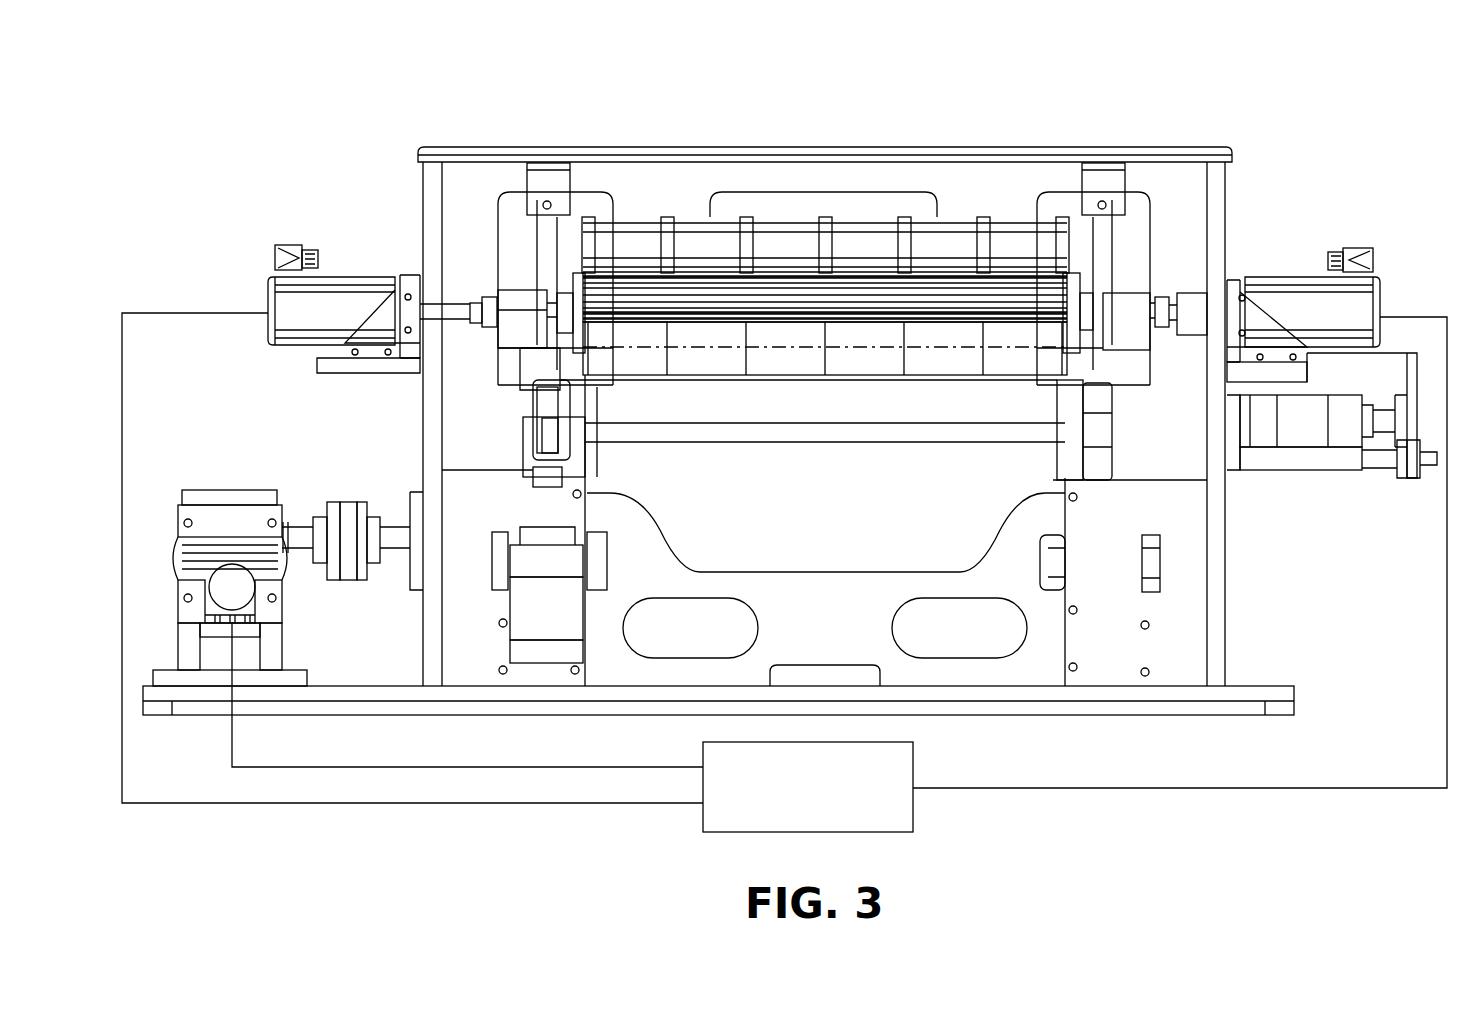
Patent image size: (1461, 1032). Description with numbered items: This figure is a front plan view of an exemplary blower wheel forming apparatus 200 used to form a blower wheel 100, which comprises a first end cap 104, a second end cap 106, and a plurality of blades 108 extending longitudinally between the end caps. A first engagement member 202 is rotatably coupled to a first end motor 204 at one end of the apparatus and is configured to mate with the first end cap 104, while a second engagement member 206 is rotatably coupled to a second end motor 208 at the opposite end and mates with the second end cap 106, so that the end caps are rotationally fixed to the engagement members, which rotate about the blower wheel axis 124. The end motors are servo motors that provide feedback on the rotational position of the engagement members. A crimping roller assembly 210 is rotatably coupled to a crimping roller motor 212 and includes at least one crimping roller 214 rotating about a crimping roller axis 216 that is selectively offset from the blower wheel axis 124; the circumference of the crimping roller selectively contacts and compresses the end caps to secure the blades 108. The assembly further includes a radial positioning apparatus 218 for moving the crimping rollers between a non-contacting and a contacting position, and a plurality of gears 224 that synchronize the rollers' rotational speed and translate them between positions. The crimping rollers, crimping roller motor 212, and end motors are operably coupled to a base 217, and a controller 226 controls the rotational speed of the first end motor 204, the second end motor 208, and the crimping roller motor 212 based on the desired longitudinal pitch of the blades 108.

The blower wheel 100 is at (781, 261).
The first end cap 104 is at (590, 278).
The second end cap 106 is at (1063, 277).
The plurality of blades 108 is at (848, 283).
The blower wheel axis 124 is at (523, 312).
The apparatus 200 is at (1255, 62).
The first engagement member 202 is at (577, 297).
The first end motor 204 is at (358, 298).
The second engagement member 206 is at (1066, 293).
The second end motor 208 is at (1297, 307).
The crimping roller assembly 210 is at (633, 390).
The crimping roller motor 212 is at (232, 497).
The crimping roller 214 is at (587, 273).
The crimping roller axis 216 is at (793, 348).
The base 217 is at (1253, 680).
The radial positioning apparatus 218 is at (670, 390).
The plurality of gears 224 is at (535, 449).
The controller 226 is at (913, 815).